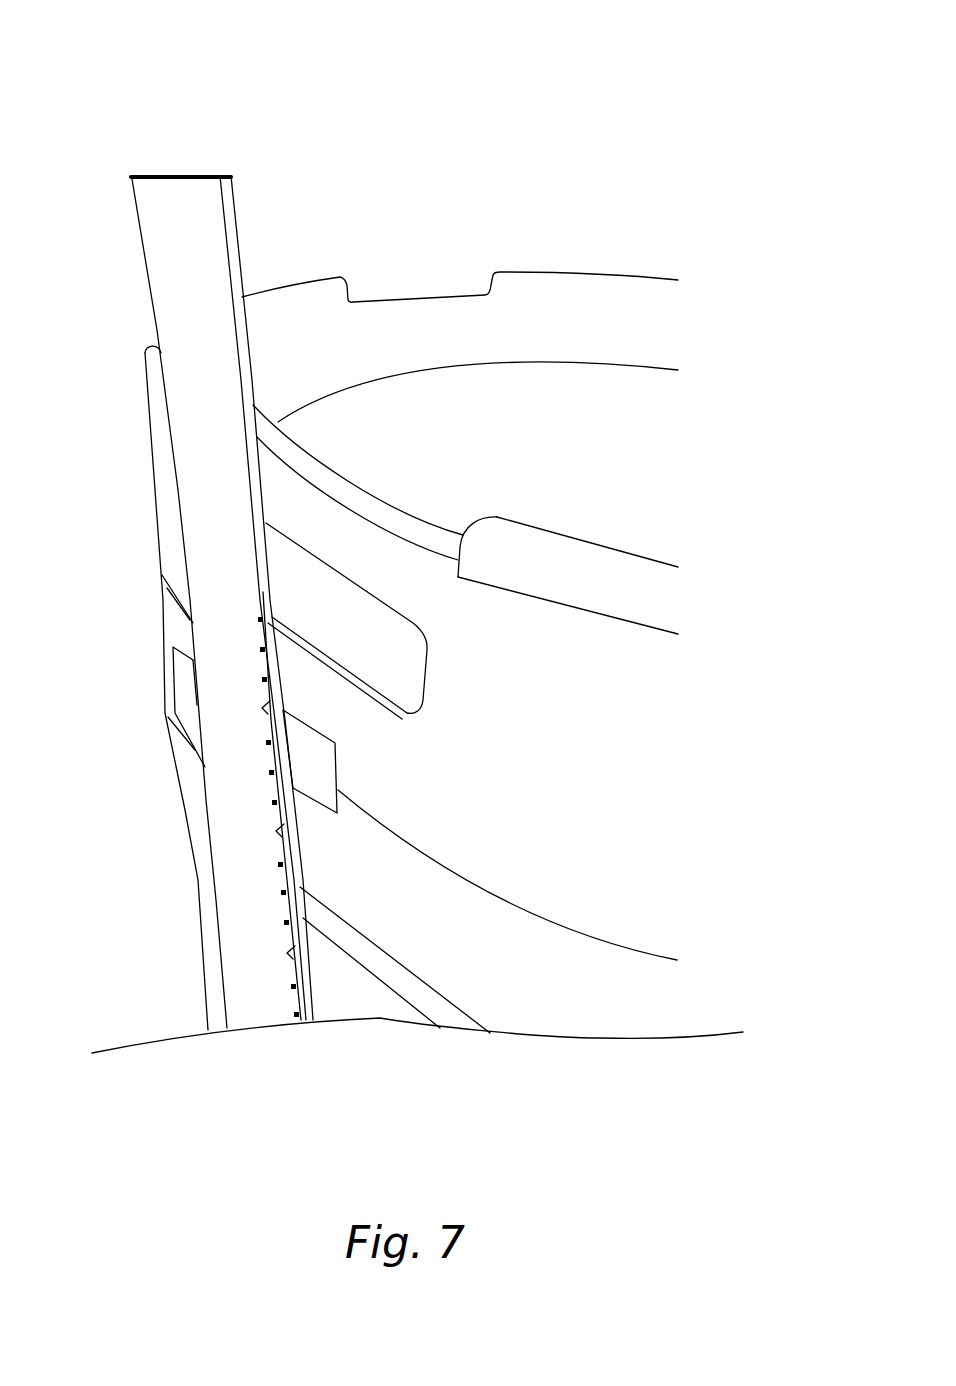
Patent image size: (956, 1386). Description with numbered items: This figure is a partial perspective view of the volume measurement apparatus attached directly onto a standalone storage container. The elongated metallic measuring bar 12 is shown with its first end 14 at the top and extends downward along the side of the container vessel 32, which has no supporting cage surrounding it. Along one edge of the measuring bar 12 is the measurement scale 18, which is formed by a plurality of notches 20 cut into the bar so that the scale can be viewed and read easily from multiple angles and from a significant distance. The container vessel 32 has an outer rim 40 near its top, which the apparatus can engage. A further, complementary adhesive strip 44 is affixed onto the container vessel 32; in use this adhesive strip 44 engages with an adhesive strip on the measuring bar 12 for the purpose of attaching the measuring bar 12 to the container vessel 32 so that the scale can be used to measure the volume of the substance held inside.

The measuring bar 12 is at (210, 465).
The first end 14 is at (187, 176).
The measurement scale 18 is at (287, 835).
The notches 20 is at (258, 593).
The container vessel 32 is at (558, 798).
The outer rim 40 is at (578, 577).
The adhesive strip 44 is at (300, 770).